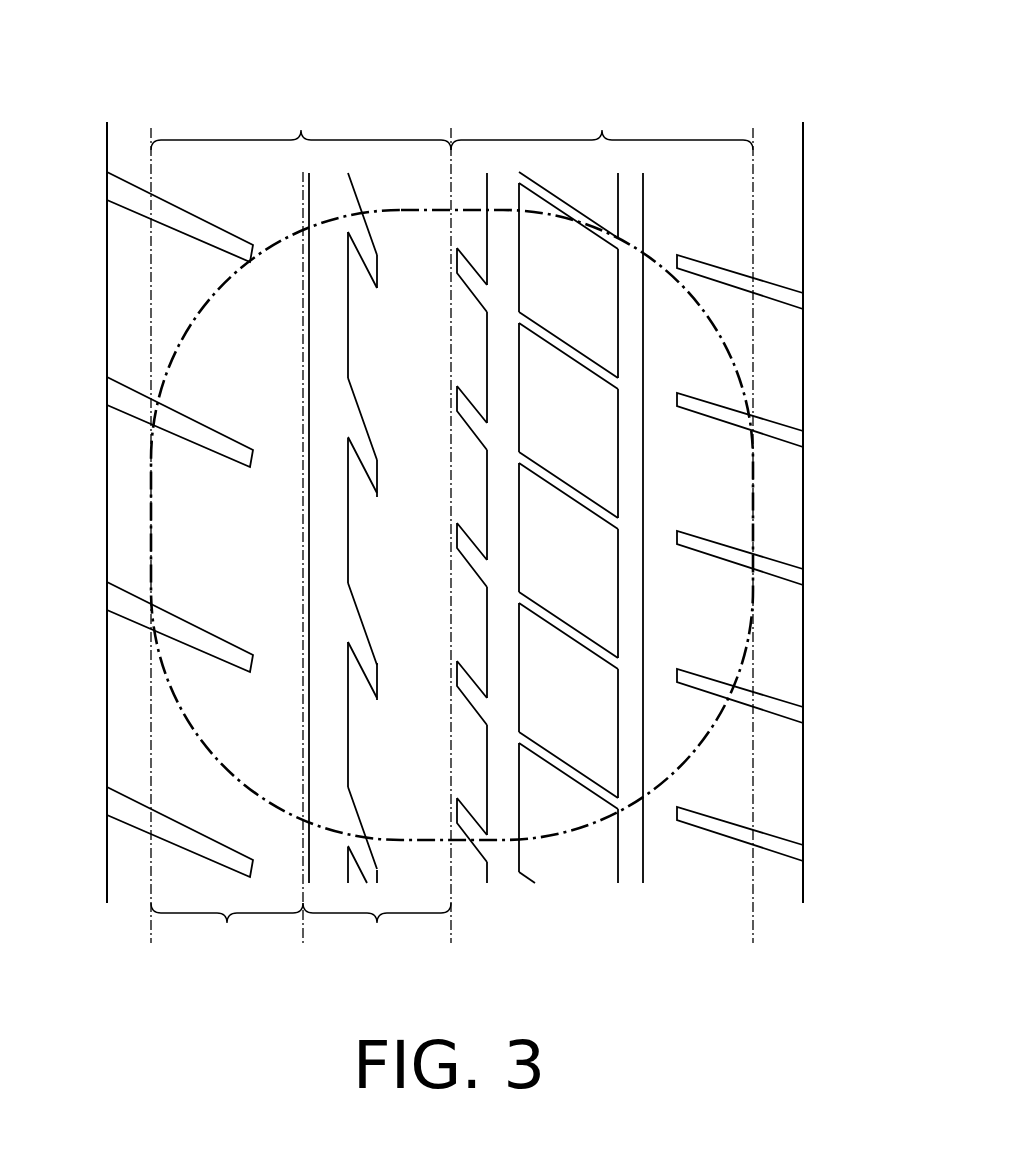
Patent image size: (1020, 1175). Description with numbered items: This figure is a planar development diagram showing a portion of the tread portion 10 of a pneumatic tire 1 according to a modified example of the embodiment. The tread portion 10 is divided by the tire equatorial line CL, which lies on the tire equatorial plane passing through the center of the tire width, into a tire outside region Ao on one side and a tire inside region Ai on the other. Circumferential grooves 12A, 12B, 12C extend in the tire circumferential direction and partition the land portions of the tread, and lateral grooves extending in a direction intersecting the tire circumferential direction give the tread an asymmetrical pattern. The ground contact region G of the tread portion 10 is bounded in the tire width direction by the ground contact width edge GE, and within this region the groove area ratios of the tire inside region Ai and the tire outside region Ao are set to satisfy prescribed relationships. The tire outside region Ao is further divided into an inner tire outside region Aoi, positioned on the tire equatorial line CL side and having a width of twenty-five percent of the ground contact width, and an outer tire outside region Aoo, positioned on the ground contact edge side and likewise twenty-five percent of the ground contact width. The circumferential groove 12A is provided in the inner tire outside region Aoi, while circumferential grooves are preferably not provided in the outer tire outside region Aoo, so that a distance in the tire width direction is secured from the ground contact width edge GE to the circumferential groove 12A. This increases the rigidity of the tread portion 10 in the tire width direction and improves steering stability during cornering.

The pneumatic tire 1 is at (810, 66).
The tread portion 10 is at (814, 157).
The tire equatorial line CL is at (451, 521).
The circumferential groove 12A is at (338, 198).
The circumferential groove 12B is at (502, 182).
The circumferential groove 12C is at (630, 203).
The ground contact region G is at (690, 507).
The ground contact width edge GE is at (173, 515).
The tire outside region Ao is at (301, 124).
The tire inside region Ai is at (602, 124).
The outer tire outside region Aoo is at (227, 930).
The inner tire outside region Aoi is at (377, 930).